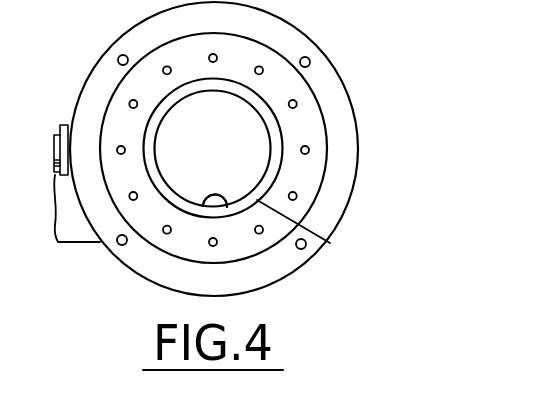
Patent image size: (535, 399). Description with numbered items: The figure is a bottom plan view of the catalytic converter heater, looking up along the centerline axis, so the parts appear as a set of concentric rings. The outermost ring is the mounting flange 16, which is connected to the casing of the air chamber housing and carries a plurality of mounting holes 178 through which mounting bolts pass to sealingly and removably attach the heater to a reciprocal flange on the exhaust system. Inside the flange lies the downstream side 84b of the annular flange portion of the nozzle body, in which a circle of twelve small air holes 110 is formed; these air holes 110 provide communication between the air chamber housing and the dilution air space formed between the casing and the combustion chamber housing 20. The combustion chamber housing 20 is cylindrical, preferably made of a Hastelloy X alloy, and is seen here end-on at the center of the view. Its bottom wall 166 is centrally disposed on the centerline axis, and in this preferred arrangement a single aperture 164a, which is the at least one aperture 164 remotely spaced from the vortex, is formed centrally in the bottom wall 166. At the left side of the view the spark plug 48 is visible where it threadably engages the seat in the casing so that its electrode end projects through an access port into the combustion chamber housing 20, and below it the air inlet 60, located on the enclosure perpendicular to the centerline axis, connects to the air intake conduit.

The mounting flange 16 is at (347, 141).
The combustion chamber housing 20 is at (196, 210).
The spark plug 48 is at (54, 133).
The air inlet 60 is at (87, 247).
The downstream side 84b is at (160, 53).
The air holes 110 is at (264, 73).
The aperture 164 is at (227, 208).
The single aperture 164a is at (215, 200).
The bottom wall 166 is at (320, 232).
The mounting holes 178 is at (311, 53).